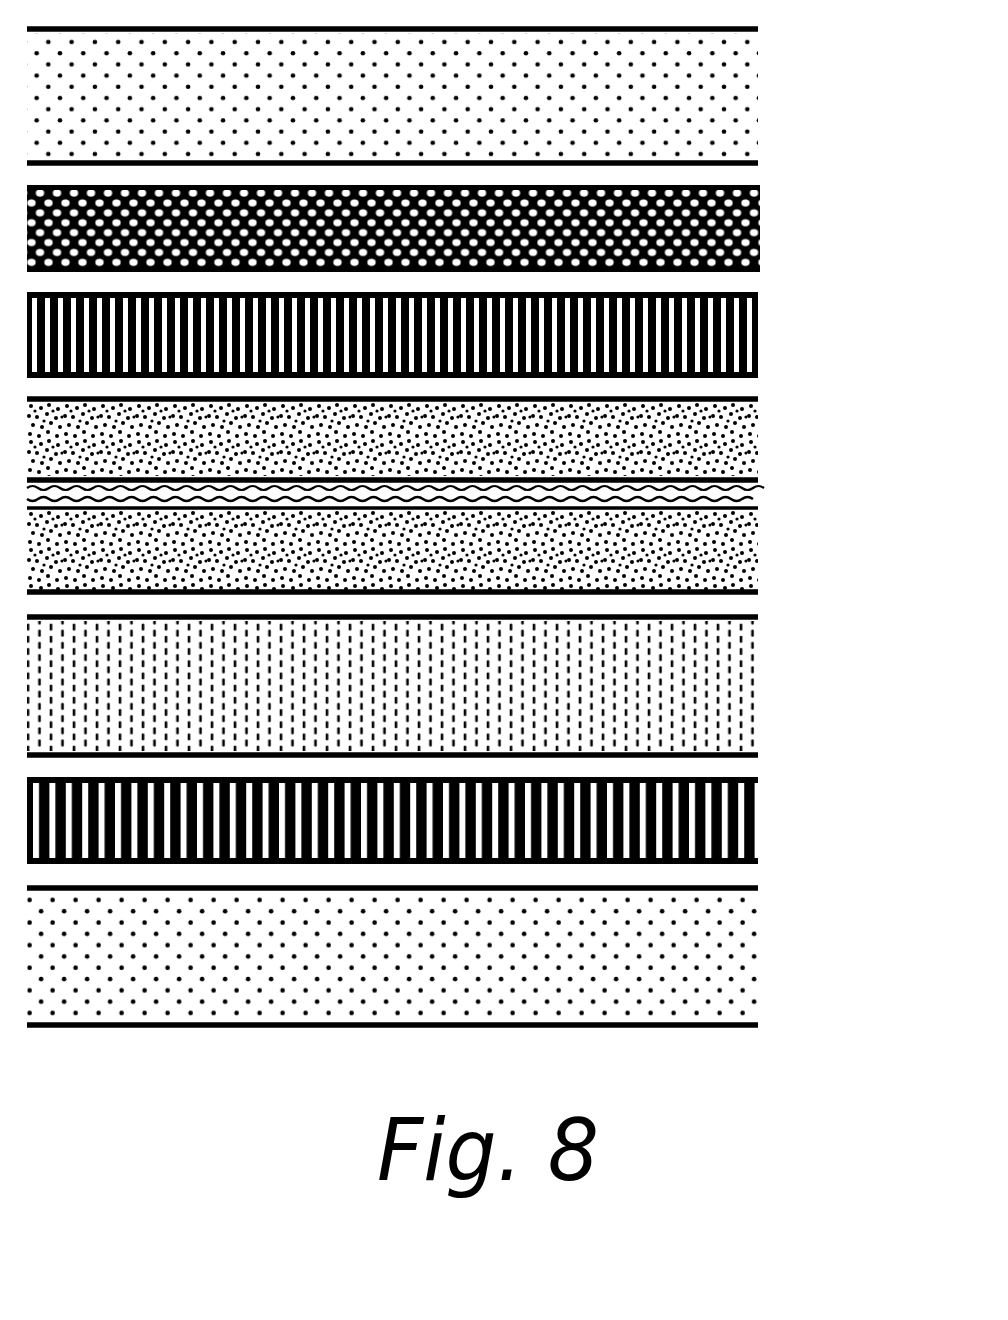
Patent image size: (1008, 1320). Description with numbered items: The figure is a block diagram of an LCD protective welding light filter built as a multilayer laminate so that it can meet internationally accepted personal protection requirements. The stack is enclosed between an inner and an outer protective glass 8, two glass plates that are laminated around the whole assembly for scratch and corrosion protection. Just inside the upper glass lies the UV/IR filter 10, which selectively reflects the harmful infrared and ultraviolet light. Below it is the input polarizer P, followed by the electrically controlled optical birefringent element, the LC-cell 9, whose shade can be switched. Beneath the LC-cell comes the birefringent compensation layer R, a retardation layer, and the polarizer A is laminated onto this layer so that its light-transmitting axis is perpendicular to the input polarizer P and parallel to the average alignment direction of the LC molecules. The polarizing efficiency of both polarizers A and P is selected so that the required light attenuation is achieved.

The protective glass 8 is at (463, 527).
The UV/IR filter 10 is at (475, 228).
The LC-cell 9 is at (787, 419).
The input polarizer P is at (458, 335).
The birefringent compensation layer R is at (459, 686).
The polarizer A is at (459, 820).